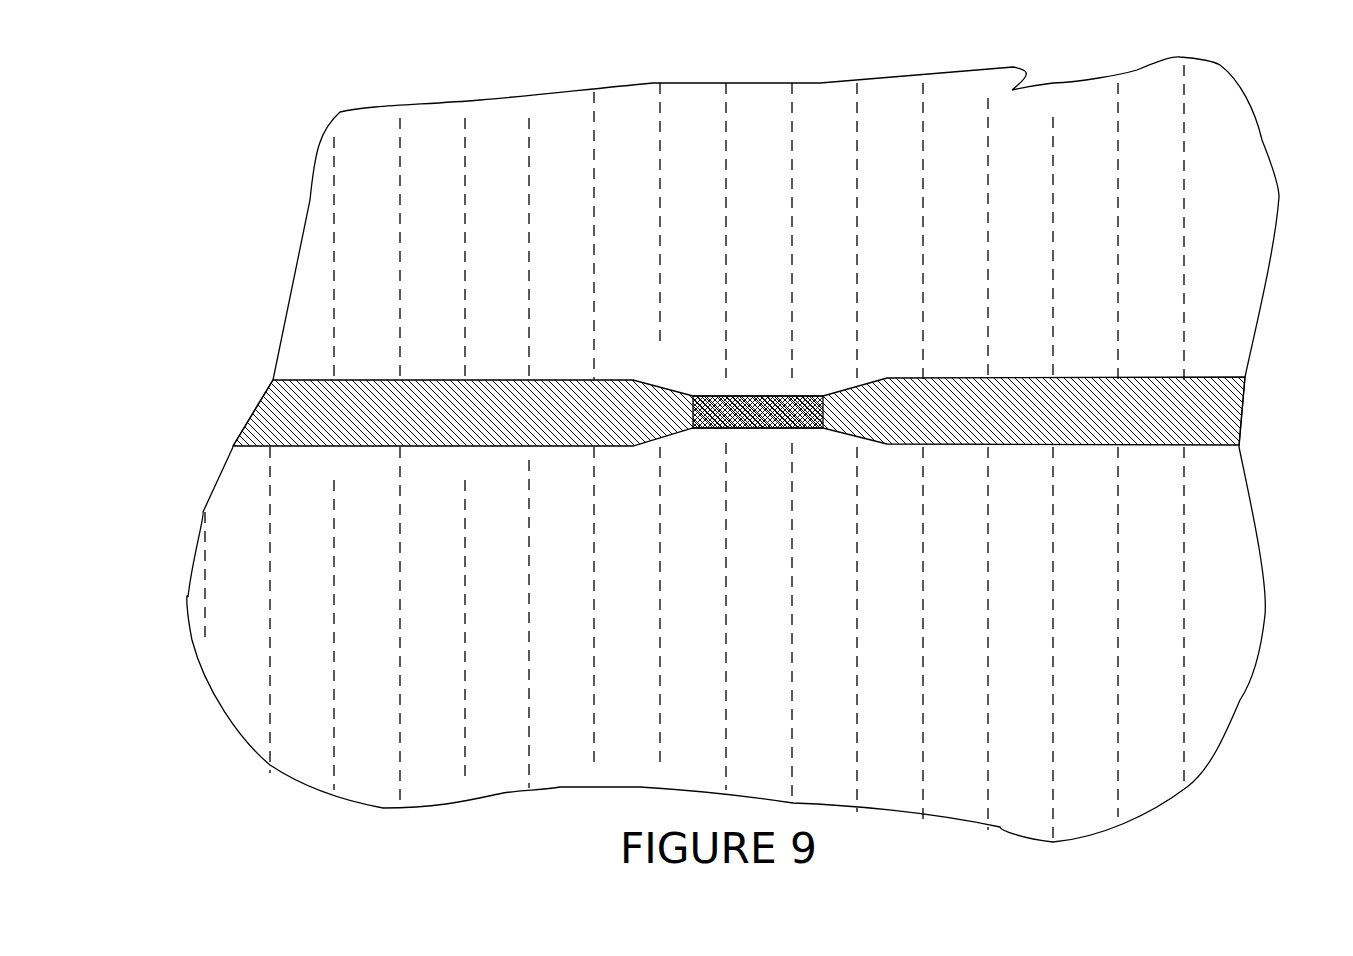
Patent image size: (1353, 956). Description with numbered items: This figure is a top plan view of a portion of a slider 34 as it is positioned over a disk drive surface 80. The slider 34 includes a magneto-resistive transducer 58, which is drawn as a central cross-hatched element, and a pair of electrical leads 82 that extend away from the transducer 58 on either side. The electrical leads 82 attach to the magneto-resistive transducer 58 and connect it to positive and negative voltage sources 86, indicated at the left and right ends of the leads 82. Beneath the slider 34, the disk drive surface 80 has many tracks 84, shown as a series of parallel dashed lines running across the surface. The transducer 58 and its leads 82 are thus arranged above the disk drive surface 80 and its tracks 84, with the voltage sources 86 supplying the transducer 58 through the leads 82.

The slider 34 is at (284, 415).
The magneto-resistive transducer 58 is at (758, 402).
The disk drive surface 80 is at (833, 606).
The electrical leads 82 is at (522, 410).
The tracks 84 is at (1052, 541).
The positive and negative voltage sources 86 is at (157, 382).